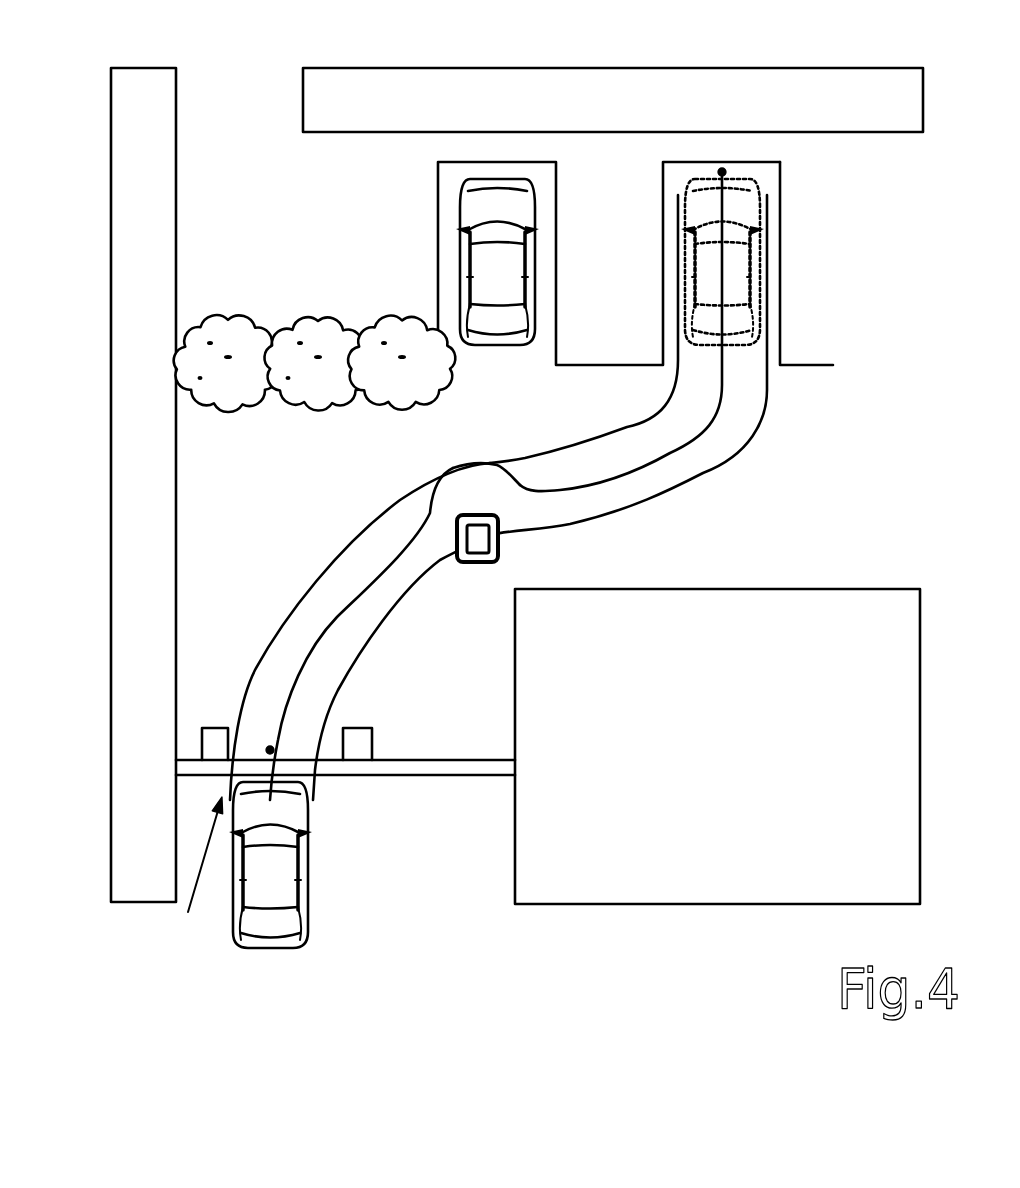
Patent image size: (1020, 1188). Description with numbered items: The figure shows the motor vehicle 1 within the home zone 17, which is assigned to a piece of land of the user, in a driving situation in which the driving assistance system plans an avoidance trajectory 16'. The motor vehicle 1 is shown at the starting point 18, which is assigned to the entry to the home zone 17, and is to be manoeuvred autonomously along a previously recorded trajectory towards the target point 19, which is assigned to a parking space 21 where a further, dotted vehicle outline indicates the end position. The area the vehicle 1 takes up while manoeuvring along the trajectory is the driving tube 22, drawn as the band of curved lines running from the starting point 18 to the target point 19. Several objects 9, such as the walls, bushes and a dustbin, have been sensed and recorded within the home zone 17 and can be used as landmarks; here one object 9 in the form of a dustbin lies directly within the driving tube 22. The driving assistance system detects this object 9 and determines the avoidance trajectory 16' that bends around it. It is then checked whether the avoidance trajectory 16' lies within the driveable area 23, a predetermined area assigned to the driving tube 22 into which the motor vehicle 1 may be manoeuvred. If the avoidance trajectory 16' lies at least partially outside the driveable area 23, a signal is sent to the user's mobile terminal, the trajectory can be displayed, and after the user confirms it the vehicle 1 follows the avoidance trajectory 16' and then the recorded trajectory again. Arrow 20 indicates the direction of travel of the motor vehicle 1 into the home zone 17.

The motor vehicle 1 is at (308, 873).
The object 9 is at (176, 550).
The avoidance trajectory 16' is at (449, 443).
The home zone 17 is at (205, 490).
The starting point 18 is at (270, 750).
The target point 19 is at (722, 172).
The direction of travel 20 is at (194, 872).
The parking space 21 is at (738, 132).
The driving tube 22 is at (528, 453).
The driveable area 23 is at (393, 522).